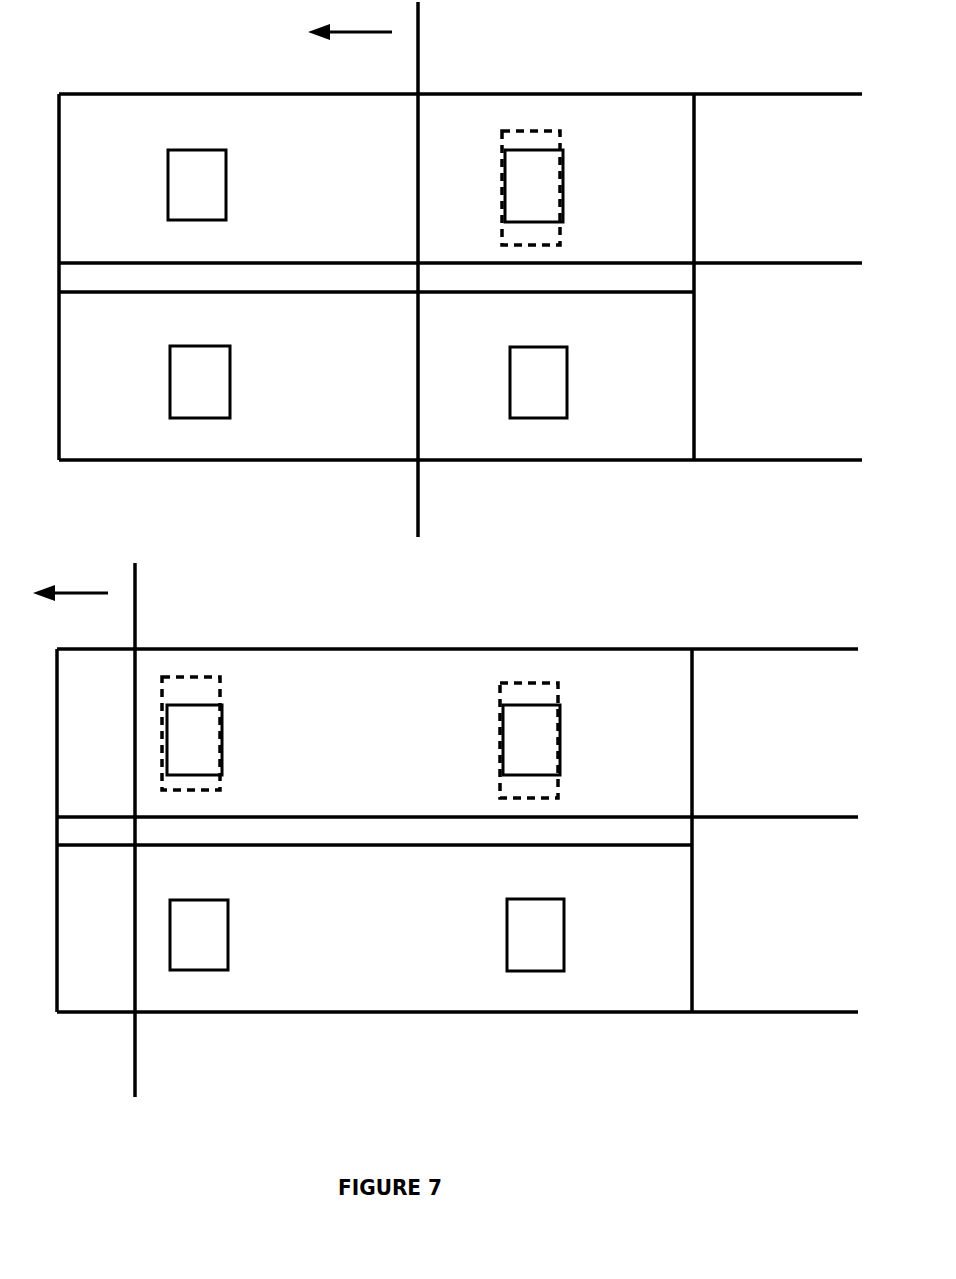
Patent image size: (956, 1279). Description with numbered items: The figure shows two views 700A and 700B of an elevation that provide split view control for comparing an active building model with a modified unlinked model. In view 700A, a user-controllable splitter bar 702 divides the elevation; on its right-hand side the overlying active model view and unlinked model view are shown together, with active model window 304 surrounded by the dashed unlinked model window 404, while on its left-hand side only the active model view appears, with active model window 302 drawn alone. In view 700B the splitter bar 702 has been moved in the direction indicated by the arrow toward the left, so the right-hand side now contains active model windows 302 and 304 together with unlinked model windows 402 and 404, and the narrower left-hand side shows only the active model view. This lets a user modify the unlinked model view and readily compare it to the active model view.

The active model window 302 is at (218, 462).
The active model window 304 is at (555, 462).
The unlinked model window 402 is at (215, 727).
The unlinked model window 404 is at (553, 459).
The splitter bar 702 is at (362, 549).
The view 700A is at (575, 498).
The view 700B is at (563, 1165).